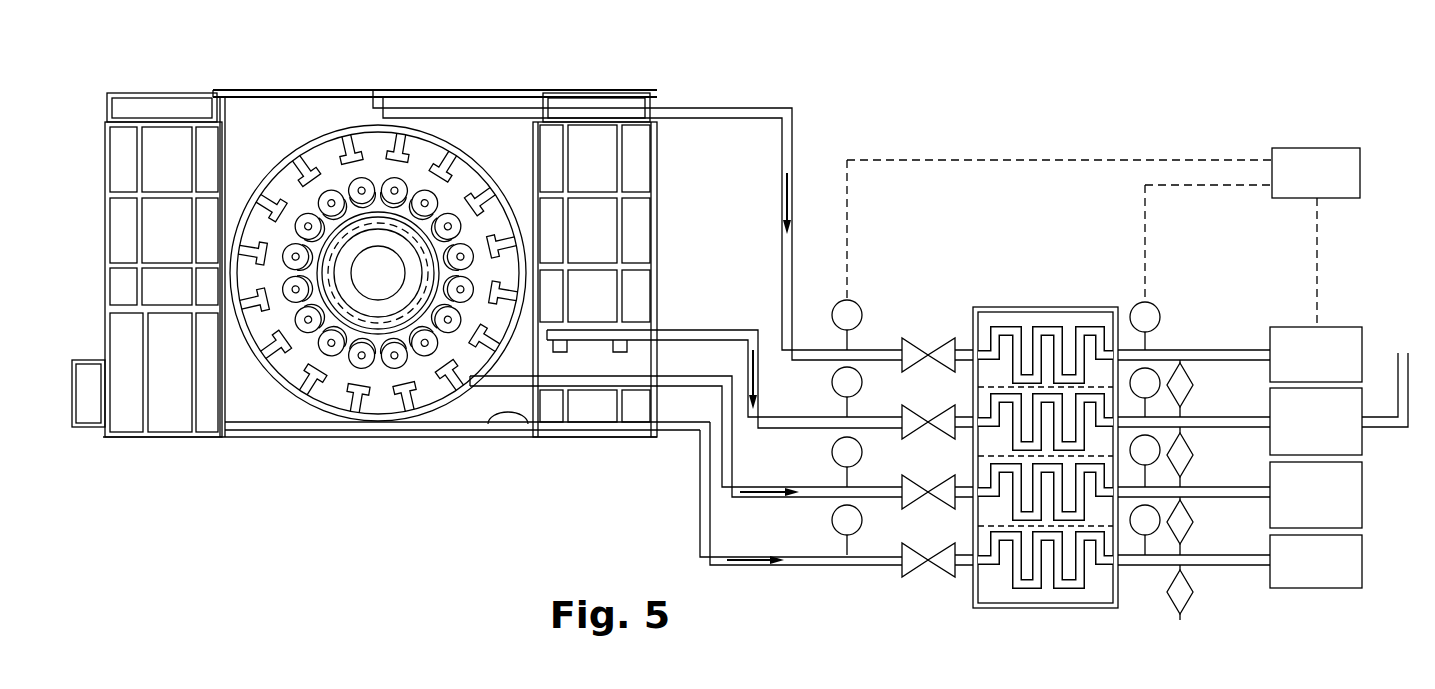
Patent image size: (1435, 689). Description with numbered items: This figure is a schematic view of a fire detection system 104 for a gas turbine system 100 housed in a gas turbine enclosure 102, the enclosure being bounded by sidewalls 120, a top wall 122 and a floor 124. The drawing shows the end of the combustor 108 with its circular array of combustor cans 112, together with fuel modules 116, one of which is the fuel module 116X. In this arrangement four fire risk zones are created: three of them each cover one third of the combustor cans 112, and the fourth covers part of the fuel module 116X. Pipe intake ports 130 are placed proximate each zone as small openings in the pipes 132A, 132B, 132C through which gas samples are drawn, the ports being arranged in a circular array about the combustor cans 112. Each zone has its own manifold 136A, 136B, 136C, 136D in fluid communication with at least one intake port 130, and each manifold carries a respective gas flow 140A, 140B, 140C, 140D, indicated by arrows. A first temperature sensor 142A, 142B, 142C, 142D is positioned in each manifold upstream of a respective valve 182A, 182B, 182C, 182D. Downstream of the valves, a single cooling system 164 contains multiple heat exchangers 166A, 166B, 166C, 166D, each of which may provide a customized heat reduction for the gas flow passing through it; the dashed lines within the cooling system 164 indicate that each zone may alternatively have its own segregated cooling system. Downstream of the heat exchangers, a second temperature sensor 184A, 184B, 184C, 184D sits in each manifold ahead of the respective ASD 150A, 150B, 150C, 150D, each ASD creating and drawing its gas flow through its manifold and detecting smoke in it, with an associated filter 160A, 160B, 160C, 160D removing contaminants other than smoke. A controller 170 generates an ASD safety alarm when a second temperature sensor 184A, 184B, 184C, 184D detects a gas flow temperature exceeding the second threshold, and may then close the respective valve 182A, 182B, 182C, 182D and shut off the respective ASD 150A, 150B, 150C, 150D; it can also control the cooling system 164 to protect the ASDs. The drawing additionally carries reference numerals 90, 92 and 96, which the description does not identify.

The rotor 90 is at (383, 380).
The bearing 92 is at (440, 345).
The shaft 96 is at (442, 345).
The gas turbine system 100 is at (304, 343).
The gas turbine enclosure 102 is at (308, 78).
The fire detection system 104 is at (794, 91).
The combustor 108 is at (343, 366).
The combustor cans 112 is at (492, 352).
The fuel modules 116 is at (170, 424).
The fuel module 116X is at (603, 402).
The sidewalls 120 is at (265, 120).
The top wall 122 is at (415, 90).
The floor 124 is at (520, 436).
The pipe intake port 130 is at (268, 195).
The pipe 132A is at (315, 152).
The pipe 132B is at (258, 350).
The pipe 132C is at (582, 305).
The manifold 136A is at (690, 108).
The manifold 136B is at (652, 428).
The manifold 136C is at (683, 384).
The manifold 136D is at (645, 337).
The gas flow 140A is at (785, 192).
The gas flow 140B is at (750, 566).
The gas flow 140C is at (760, 498).
The gas flow 140D is at (756, 382).
The first temperature sensor 142A is at (855, 312).
The first temperature sensor 142B is at (842, 528).
The first temperature sensor 142C is at (840, 450).
The first temperature sensor 142D is at (858, 380).
The ASD 150A is at (1286, 326).
The ASD 150B is at (1295, 568).
The ASD 150C is at (1340, 492).
The ASD 150D is at (1355, 410).
The filter 160A is at (1190, 398).
The filter 160B is at (1190, 605).
The filter 160C is at (1190, 535).
The filter 160D is at (1190, 468).
The cooling system 164 is at (1062, 274).
The heat exchanger 166A is at (1047, 340).
The heat exchanger 166B is at (1010, 590).
The heat exchanger 166C is at (1080, 500).
The heat exchanger 166D is at (1028, 417).
The controller 170 is at (1300, 184).
The valve 182A is at (914, 338).
The valve 182B is at (918, 575).
The valve 182C is at (924, 505).
The valve 182D is at (920, 432).
The second temperature sensor 184A is at (1155, 311).
The second temperature sensor 184B is at (1145, 536).
The second temperature sensor 184C is at (1157, 465).
The second temperature sensor 184D is at (1158, 372).